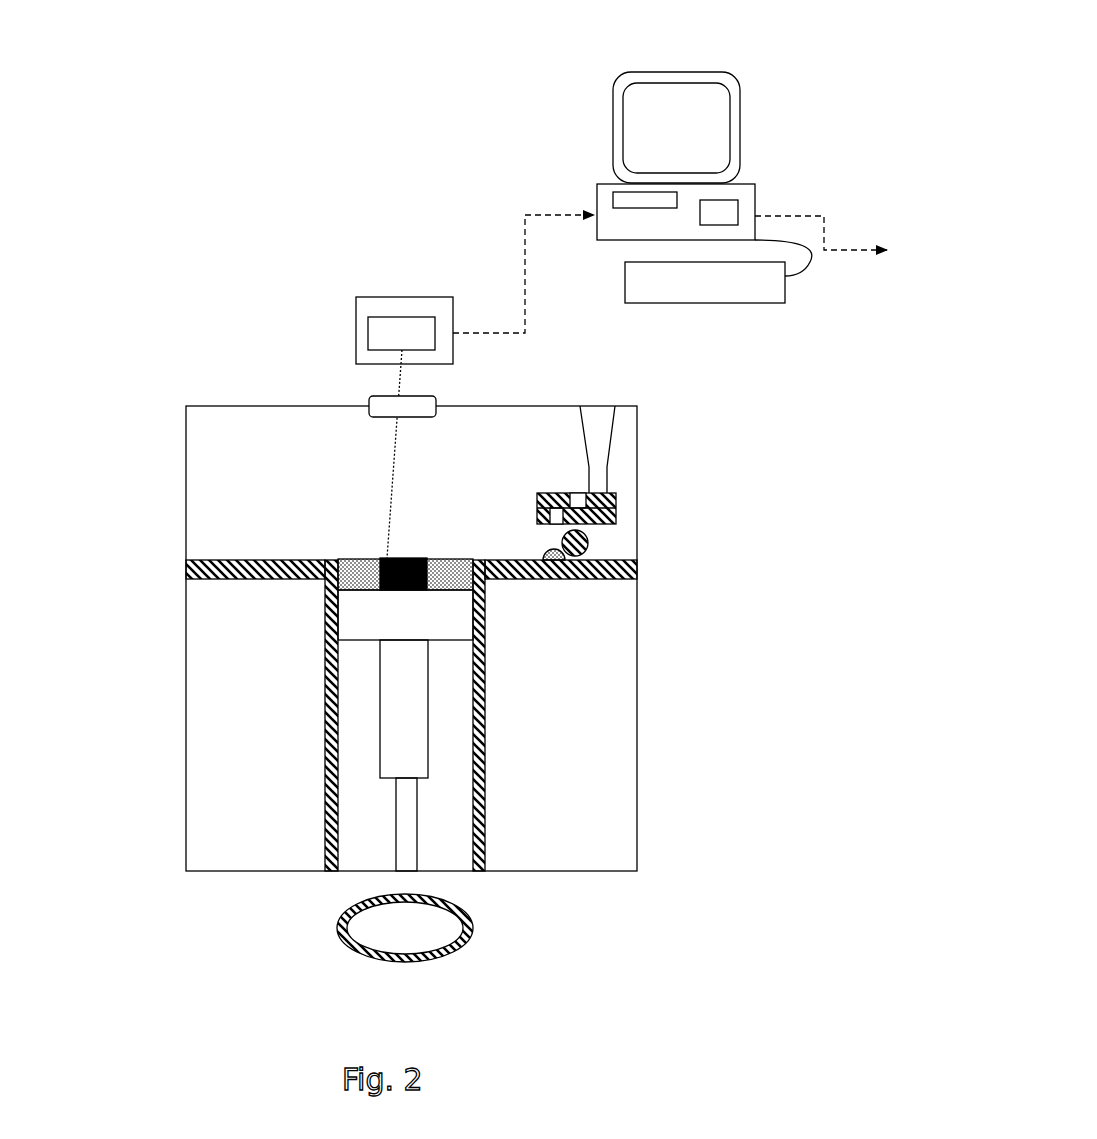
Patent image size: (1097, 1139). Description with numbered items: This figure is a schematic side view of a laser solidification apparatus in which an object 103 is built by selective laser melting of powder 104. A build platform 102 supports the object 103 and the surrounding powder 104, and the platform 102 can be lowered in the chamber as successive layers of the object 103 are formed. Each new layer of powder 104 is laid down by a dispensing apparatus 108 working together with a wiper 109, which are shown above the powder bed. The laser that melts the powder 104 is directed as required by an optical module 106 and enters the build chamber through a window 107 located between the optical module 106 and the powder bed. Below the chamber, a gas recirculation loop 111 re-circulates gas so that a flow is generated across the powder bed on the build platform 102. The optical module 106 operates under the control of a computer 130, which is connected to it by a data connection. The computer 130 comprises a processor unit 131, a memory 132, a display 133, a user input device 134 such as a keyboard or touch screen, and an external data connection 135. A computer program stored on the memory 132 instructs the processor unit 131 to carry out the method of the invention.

The build platform 102 is at (446, 610).
The object 103 is at (379, 589).
The powder 104 is at (360, 574).
The optical module 106 is at (355, 342).
The window 107 is at (376, 392).
The dispensing apparatus 108 is at (618, 506).
The wiper 109 is at (590, 544).
The gas recirculation loop 111 is at (476, 938).
The computer 130 is at (670, 189).
The processor unit 131 is at (723, 205).
The memory 132 is at (626, 190).
The display 133 is at (708, 71).
The user input device 134 is at (732, 306).
The external data connection 135 is at (862, 252).